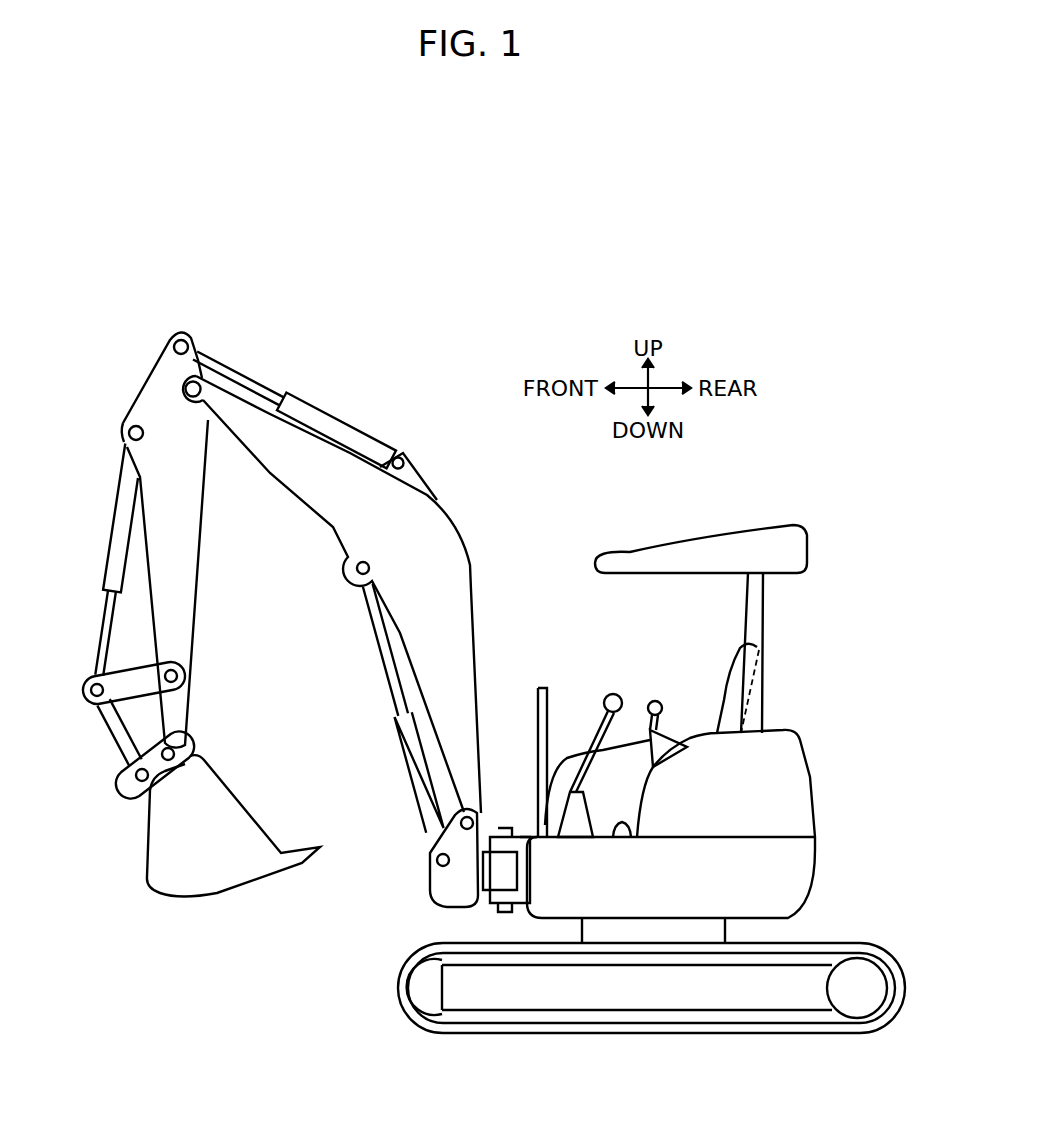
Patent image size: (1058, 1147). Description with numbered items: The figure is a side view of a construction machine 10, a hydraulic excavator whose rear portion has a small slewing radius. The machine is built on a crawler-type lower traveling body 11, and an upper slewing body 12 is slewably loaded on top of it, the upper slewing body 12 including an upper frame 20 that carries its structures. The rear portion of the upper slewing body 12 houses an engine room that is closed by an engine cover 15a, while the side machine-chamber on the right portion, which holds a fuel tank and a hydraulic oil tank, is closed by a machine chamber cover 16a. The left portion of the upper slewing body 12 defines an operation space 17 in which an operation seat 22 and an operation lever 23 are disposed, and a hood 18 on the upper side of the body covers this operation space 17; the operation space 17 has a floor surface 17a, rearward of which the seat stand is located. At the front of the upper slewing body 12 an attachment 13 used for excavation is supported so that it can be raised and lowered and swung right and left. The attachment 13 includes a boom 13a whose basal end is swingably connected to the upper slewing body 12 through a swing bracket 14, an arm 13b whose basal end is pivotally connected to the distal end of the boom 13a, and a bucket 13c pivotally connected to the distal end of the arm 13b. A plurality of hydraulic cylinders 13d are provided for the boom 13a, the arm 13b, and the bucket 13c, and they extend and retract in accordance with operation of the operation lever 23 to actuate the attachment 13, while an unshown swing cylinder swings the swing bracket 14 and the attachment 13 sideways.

The construction machine 10 is at (801, 460).
The lower traveling body 11 is at (401, 991).
The upper slewing body 12 is at (806, 722).
The attachment 13 is at (427, 449).
The boom 13a is at (459, 537).
The arm 13b is at (194, 522).
The bucket 13c is at (227, 892).
The hydraulic cylinders 13d is at (342, 430).
The swing bracket 14 is at (432, 884).
The engine cover 15a is at (803, 768).
The machine chamber cover 16a is at (631, 753).
The operation space 17 is at (629, 618).
The floor surface 17a is at (622, 840).
The hood 18 is at (797, 551).
The upper frame 20 is at (808, 892).
The operation seat 22 is at (728, 660).
The operation lever 23 is at (659, 700).